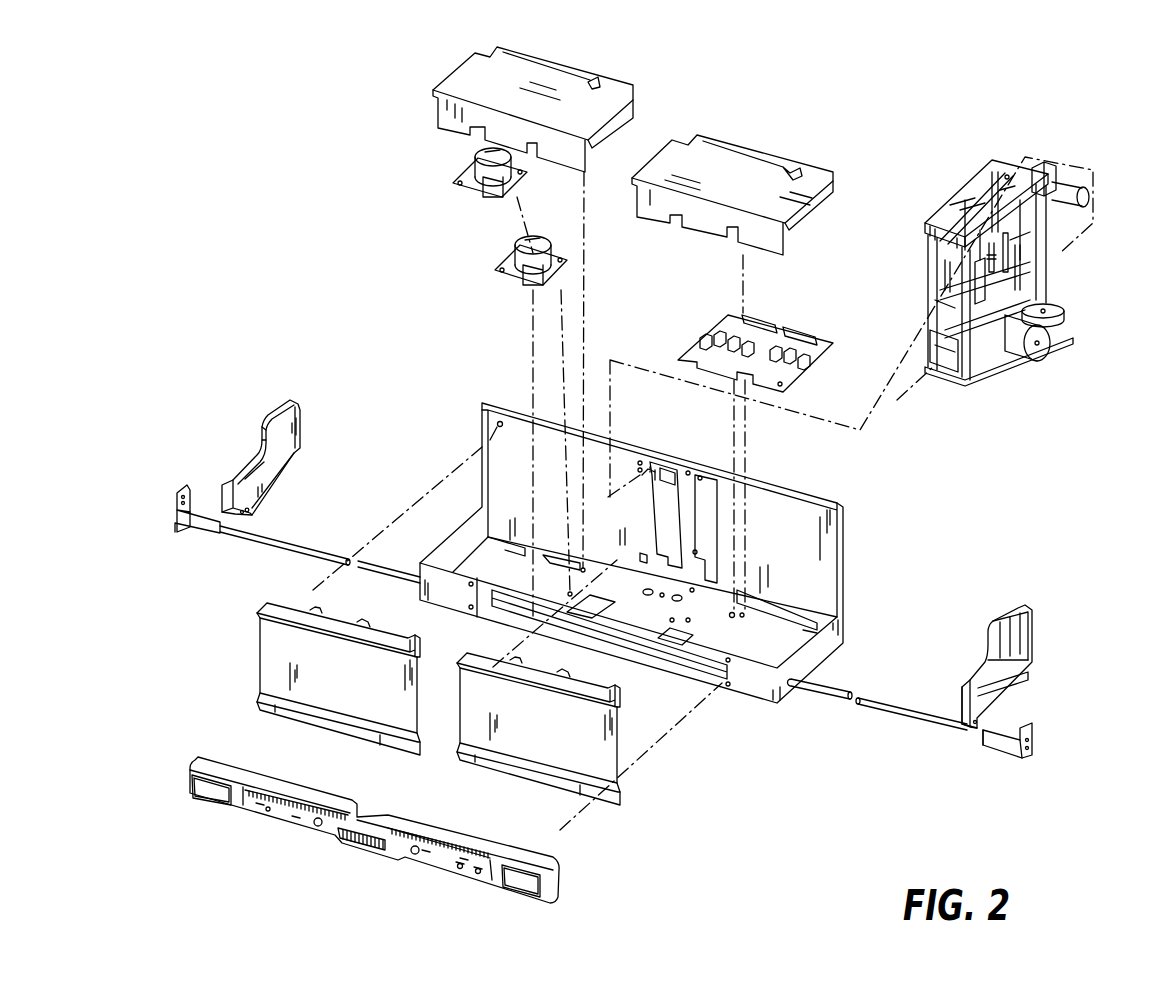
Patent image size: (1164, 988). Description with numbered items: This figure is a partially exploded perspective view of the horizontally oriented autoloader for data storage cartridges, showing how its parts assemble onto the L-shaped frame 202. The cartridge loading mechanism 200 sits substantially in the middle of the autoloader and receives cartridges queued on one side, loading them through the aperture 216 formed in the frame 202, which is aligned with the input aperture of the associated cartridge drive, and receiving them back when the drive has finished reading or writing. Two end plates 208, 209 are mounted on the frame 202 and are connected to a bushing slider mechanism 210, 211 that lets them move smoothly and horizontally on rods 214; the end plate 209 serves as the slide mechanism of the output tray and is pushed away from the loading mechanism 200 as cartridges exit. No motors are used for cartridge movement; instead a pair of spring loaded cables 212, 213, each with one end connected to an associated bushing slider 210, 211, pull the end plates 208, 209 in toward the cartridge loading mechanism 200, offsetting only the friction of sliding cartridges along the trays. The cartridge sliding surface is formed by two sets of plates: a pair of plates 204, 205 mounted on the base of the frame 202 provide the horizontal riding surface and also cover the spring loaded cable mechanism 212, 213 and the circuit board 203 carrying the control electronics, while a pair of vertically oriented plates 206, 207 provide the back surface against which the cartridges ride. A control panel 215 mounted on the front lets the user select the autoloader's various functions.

The cartridge loading mechanism 200 is at (1018, 160).
The L-shaped frame 202 is at (848, 545).
The circuit board 203 is at (832, 343).
The plate 204 is at (812, 170).
The plate 205 is at (453, 73).
The vertically oriented plate 206 is at (570, 729).
The vertically oriented plate 207 is at (262, 652).
The end plate 208 is at (1035, 628).
The end plate 209 is at (278, 400).
The bushing slider 210 is at (1035, 737).
The bushing slider 211 is at (176, 508).
The spring loaded cable 212 is at (455, 181).
The spring loaded cable 213 is at (500, 267).
The rod 214 is at (708, 656).
The control panel 215 is at (557, 885).
The aperture 216 is at (670, 478).